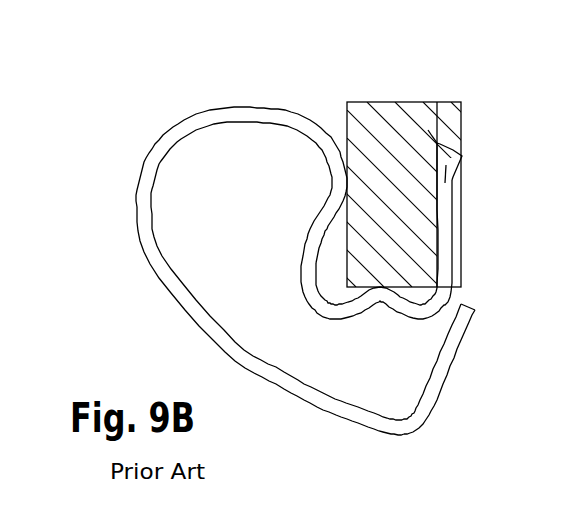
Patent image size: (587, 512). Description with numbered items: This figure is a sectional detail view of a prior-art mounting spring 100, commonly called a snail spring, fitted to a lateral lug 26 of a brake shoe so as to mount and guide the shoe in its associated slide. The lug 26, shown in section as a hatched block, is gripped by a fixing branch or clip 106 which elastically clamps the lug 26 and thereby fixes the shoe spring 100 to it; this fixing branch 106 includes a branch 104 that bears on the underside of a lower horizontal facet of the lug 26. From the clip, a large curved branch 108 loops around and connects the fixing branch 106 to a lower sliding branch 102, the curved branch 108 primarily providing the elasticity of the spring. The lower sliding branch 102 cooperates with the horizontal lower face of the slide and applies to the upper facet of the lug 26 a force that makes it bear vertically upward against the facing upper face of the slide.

The mounting spring 100 is at (309, 246).
The lateral lug 26 is at (369, 134).
The fixing branch 106 is at (335, 188).
The curved branch 108 is at (192, 306).
The branch 104 is at (386, 300).
The lower sliding branch 102 is at (399, 430).